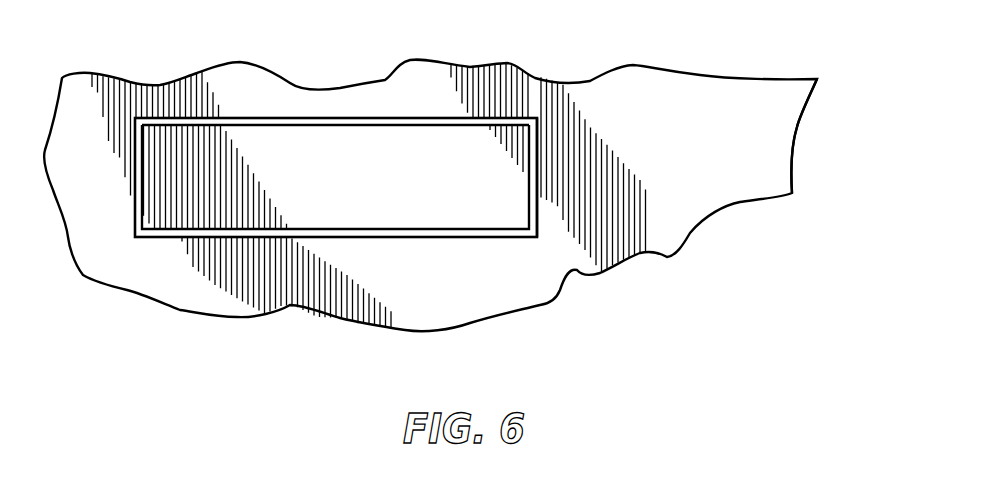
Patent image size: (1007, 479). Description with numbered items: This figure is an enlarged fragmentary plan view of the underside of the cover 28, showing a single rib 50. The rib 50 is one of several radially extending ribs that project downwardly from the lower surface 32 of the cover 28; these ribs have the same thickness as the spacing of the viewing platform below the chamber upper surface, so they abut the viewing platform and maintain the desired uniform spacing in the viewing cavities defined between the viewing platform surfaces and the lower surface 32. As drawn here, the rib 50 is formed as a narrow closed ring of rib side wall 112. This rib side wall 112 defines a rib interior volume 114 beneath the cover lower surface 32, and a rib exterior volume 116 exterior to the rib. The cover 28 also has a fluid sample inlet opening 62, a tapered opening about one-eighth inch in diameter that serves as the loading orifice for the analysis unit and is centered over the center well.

The cover 28 is at (658, 72).
The lower surface 32 is at (724, 153).
The rib 50 is at (342, 117).
The fluid sample inlet opening 62 is at (800, 120).
The rib side wall 112 is at (523, 198).
The rib interior volume 114 is at (257, 127).
The rib exterior volume 116 is at (537, 147).